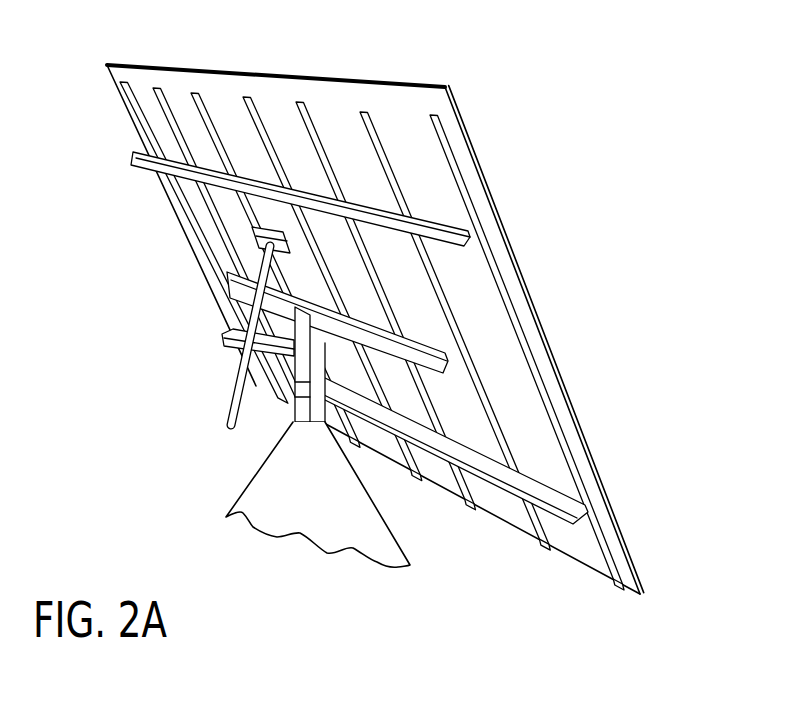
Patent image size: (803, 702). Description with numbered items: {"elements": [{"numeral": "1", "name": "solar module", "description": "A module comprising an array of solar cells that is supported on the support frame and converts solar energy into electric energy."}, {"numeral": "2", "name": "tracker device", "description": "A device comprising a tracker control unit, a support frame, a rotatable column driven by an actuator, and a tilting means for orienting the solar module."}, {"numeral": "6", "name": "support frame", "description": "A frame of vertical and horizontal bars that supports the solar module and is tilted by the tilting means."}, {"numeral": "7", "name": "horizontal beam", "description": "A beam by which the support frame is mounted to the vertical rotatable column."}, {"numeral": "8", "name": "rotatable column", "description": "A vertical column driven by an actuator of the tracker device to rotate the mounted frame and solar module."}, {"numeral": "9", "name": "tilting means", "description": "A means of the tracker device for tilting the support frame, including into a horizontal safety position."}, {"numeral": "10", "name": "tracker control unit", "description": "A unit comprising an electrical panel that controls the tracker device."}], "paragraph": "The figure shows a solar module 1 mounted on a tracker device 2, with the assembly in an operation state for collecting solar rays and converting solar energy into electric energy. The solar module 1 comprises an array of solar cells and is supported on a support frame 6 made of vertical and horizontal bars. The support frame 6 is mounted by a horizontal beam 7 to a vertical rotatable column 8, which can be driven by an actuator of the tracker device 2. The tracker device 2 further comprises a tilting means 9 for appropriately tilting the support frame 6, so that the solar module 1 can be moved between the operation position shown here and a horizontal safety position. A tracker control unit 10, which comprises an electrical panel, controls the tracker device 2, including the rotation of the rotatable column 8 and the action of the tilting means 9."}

The roof 1 is at (341, 72).
The mounting assembly 2 is at (336, 375).
The rafter 6 is at (447, 386).
The cross bar 7 is at (238, 281).
The post 8 is at (293, 420).
The lower cross bar 9 is at (236, 340).
The clamp 10 is at (293, 388).